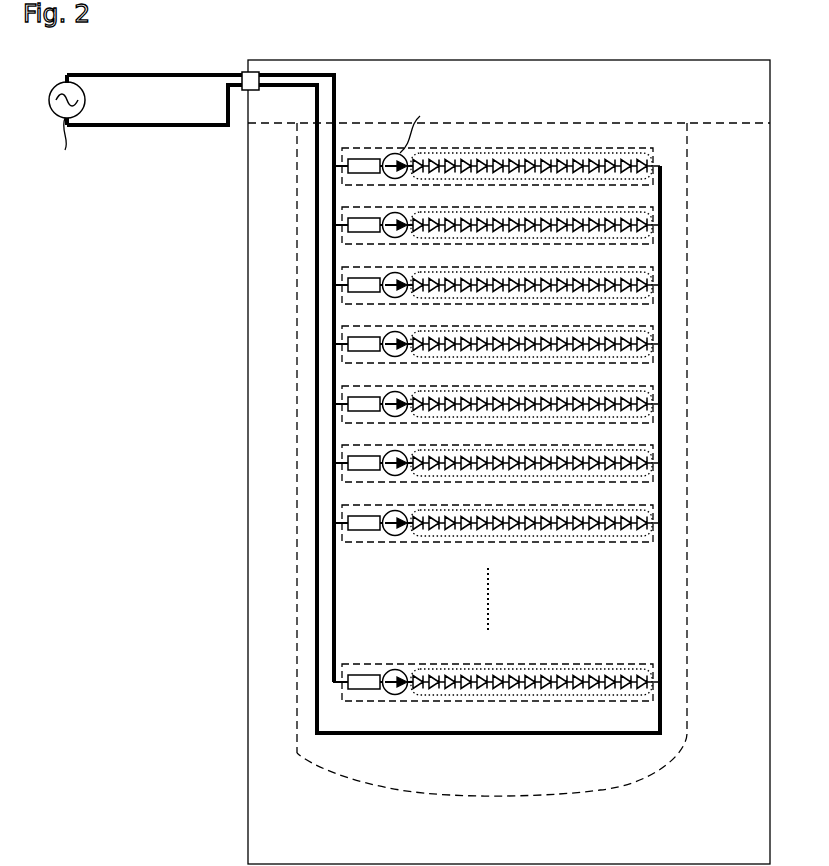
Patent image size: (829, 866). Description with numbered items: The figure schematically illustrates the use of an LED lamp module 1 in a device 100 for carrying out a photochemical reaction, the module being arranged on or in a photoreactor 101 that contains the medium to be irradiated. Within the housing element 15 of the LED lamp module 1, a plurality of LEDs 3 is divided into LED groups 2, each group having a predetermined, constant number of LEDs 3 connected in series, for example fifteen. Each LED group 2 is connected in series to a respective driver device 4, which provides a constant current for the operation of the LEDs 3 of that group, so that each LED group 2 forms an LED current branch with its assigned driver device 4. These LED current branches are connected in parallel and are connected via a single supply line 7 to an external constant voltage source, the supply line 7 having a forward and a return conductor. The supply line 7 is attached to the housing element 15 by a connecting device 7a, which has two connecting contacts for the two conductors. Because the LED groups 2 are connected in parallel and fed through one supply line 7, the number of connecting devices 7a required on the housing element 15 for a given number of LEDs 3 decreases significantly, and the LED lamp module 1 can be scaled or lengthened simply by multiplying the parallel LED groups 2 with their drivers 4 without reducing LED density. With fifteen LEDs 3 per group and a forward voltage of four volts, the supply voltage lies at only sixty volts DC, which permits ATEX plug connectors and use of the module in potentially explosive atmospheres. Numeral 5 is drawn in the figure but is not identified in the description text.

The LED lamp module 1 is at (622, 758).
The LED group 2 is at (539, 392).
The LED 3 is at (535, 137).
The driver device 4 is at (358, 128).
The LED module unit boundary 5 is at (536, 157).
The supply line 7 is at (319, 73).
The connecting device 7a is at (241, 83).
The housing element 15 is at (598, 97).
The device for carrying out a photochemical reaction 100 is at (411, 440).
The photoreactor 101 is at (265, 493).